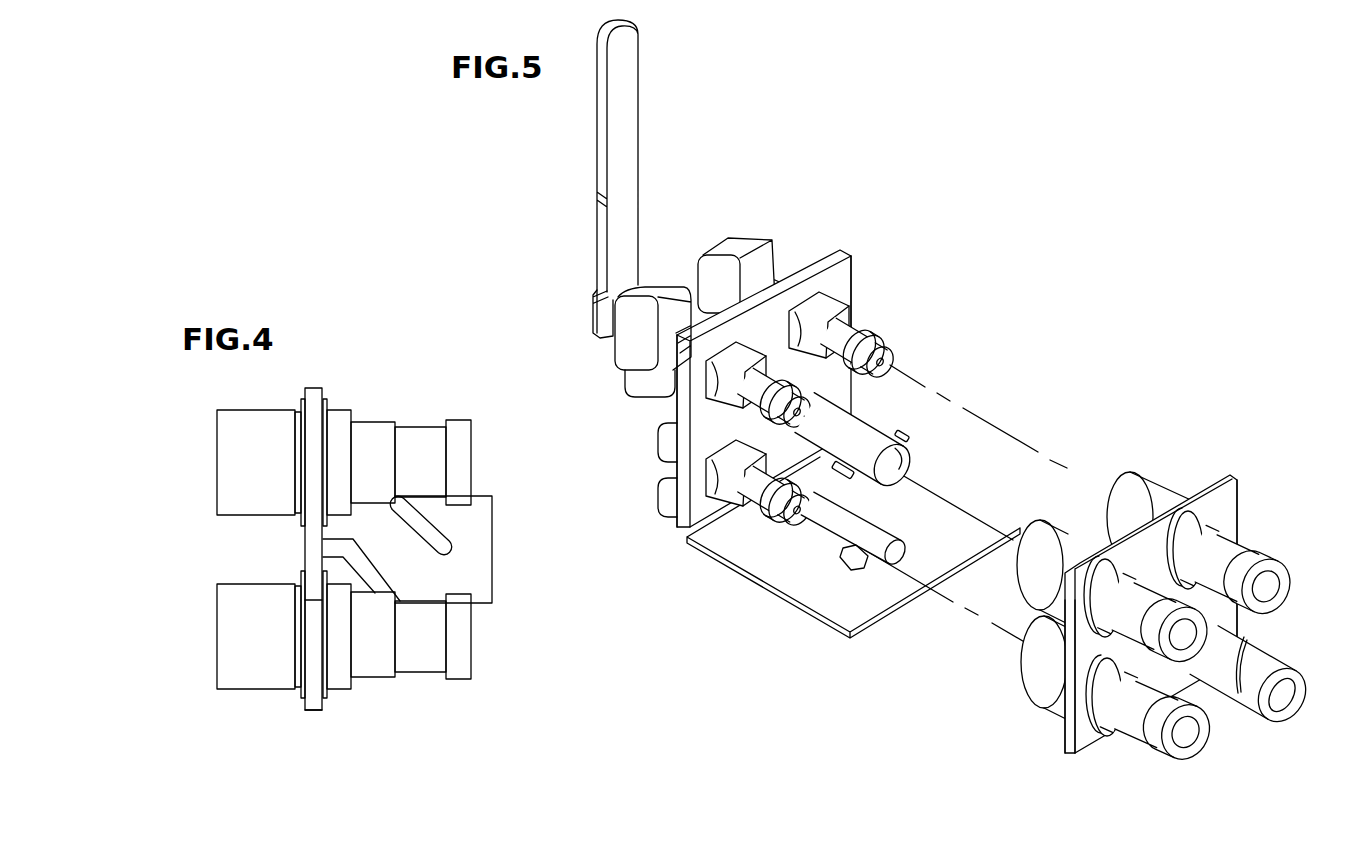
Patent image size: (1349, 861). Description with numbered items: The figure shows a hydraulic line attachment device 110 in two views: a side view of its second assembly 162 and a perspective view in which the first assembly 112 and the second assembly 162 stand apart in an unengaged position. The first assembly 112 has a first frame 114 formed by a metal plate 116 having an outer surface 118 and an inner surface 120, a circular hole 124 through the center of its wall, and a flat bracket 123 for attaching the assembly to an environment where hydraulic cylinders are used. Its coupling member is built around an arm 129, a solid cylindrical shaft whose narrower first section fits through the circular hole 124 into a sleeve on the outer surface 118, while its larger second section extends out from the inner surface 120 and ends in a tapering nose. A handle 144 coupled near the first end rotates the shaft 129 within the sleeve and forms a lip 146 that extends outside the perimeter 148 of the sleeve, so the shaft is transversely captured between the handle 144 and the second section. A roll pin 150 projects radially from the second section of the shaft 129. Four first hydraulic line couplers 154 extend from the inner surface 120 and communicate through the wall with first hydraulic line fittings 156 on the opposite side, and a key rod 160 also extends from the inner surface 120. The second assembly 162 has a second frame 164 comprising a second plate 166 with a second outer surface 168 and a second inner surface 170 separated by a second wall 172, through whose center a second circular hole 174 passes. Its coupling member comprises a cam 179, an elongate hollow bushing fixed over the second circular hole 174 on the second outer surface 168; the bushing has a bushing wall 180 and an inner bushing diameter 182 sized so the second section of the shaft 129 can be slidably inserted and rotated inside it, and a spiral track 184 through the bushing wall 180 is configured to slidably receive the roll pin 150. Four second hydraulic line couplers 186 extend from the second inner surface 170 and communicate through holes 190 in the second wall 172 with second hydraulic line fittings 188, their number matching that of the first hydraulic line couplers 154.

In FIG. 5, the hydraulic line attachment device 110 is at (907, 685).
In FIG. 5, the first assembly 112 is at (757, 614).
In FIG. 5, the first frame 114 is at (828, 256).
In FIG. 5, the plate 116 is at (853, 273).
In FIG. 5, the outer surface 118 is at (676, 405).
In FIG. 5, the inner surface 120 is at (695, 520).
In FIG. 5, the bracket 123 is at (858, 613).
In FIG. 5, the circular hole 124 is at (792, 390).
In FIG. 5, the arm 129 is at (858, 427).
In FIG. 5, the handle 144 is at (603, 78).
In FIG. 5, the lip 146 is at (605, 340).
In FIG. 5, the perimeter 148 is at (632, 285).
In FIG. 5, the roll pin 150 is at (908, 437).
In FIG. 5, the first hydraulic line couplers 154 is at (837, 357).
In FIG. 5, the first hydraulic line fittings 156 is at (723, 257).
In FIG. 5, the key rod 160 is at (903, 550).
In FIG. 5, the second assembly 162 is at (868, 528).
In FIG. 5, the second frame 164 is at (1232, 492).
In FIG. 4, the second plate 166 is at (314, 388).
In FIG. 5, the second plate 166 is at (1220, 478).
In FIG. 4, the second outer surface 168 is at (325, 390).
In FIG. 5, the second outer surface 168 is at (1083, 743).
In FIG. 4, the second inner surface 170 is at (303, 390).
In FIG. 5, the second inner surface 170 is at (1065, 732).
In FIG. 4, the second wall 172 is at (314, 700).
In FIG. 4, the second circular hole 174 is at (305, 548).
In FIG. 4, the cam 179 is at (478, 556).
In FIG. 5, the cam 179 is at (1257, 706).
In FIG. 5, the bushing wall 180 is at (1290, 669).
In FIG. 5, the inner bushing diameter 182 is at (1286, 696).
In FIG. 4, the spiral track 184 is at (412, 517).
In FIG. 5, the spiral track 184 is at (1242, 658).
In FIG. 5, the second hydraulic line couplers 186 is at (1140, 488).
In FIG. 5, the second hydraulic line fittings 188 is at (1211, 638).
In FIG. 4, the holes 190 is at (316, 626).